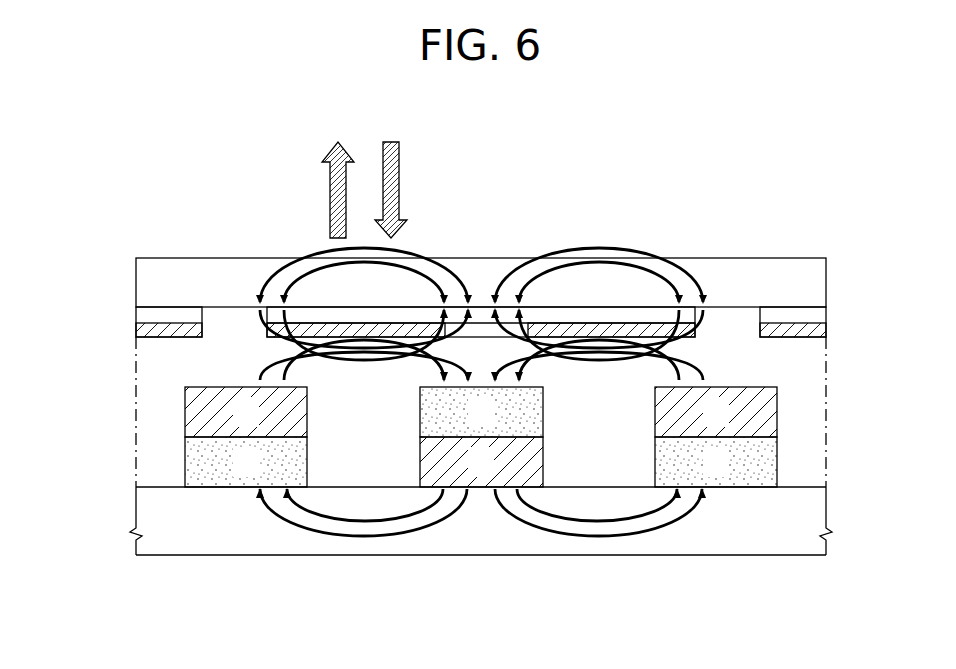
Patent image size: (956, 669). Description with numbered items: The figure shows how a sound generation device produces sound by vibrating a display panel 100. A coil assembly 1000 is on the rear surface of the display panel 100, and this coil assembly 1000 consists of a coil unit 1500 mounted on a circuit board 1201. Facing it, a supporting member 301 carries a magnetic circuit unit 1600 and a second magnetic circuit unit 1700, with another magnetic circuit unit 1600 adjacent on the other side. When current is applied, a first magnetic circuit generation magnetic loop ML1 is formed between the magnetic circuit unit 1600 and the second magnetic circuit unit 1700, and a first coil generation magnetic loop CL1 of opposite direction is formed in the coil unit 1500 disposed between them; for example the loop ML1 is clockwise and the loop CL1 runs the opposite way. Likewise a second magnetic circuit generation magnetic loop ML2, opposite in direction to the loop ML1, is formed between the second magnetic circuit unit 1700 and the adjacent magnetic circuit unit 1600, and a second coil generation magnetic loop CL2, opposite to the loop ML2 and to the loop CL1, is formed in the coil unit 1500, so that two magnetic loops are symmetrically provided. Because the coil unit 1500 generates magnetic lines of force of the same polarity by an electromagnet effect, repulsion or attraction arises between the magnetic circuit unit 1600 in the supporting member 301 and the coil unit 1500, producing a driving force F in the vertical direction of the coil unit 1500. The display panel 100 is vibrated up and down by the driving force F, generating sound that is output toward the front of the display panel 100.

The display panel 100 is at (775, 282).
The coil assembly 1000 is at (481, 250).
The circuit board 1201 is at (481, 313).
The coil unit 1500 is at (455, 195).
The magnetic circuit unit 1600 is at (176, 437).
The second magnetic circuit unit 1700 is at (411, 437).
The supporting member 301 is at (778, 534).
The first coil generation magnetic loop CL1 is at (318, 252).
The second coil generation magnetic loop CL2 is at (647, 253).
The first magnetic circuit generation magnetic loop ML1 is at (337, 538).
The second magnetic circuit generation magnetic loop ML2 is at (570, 538).
The driving force F is at (364, 178).